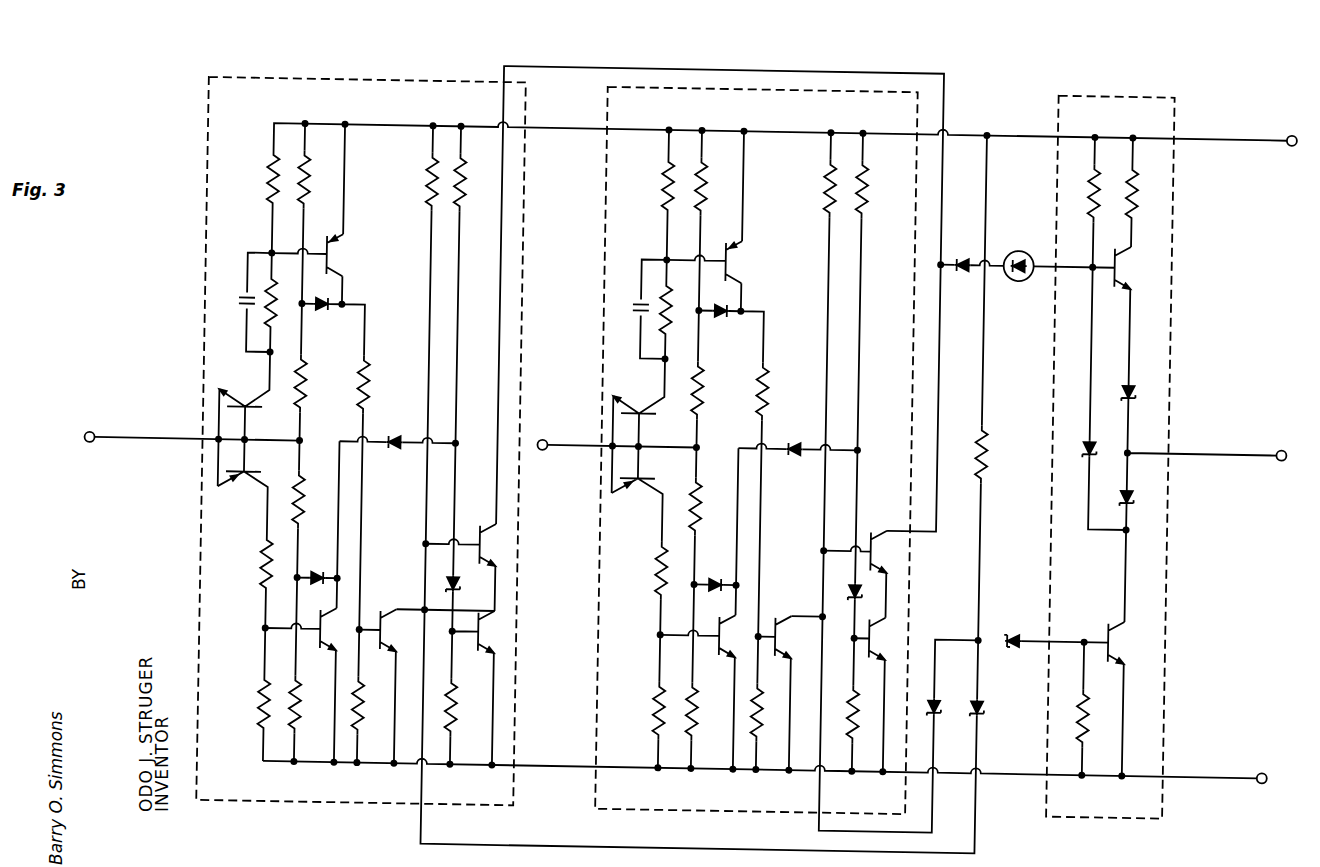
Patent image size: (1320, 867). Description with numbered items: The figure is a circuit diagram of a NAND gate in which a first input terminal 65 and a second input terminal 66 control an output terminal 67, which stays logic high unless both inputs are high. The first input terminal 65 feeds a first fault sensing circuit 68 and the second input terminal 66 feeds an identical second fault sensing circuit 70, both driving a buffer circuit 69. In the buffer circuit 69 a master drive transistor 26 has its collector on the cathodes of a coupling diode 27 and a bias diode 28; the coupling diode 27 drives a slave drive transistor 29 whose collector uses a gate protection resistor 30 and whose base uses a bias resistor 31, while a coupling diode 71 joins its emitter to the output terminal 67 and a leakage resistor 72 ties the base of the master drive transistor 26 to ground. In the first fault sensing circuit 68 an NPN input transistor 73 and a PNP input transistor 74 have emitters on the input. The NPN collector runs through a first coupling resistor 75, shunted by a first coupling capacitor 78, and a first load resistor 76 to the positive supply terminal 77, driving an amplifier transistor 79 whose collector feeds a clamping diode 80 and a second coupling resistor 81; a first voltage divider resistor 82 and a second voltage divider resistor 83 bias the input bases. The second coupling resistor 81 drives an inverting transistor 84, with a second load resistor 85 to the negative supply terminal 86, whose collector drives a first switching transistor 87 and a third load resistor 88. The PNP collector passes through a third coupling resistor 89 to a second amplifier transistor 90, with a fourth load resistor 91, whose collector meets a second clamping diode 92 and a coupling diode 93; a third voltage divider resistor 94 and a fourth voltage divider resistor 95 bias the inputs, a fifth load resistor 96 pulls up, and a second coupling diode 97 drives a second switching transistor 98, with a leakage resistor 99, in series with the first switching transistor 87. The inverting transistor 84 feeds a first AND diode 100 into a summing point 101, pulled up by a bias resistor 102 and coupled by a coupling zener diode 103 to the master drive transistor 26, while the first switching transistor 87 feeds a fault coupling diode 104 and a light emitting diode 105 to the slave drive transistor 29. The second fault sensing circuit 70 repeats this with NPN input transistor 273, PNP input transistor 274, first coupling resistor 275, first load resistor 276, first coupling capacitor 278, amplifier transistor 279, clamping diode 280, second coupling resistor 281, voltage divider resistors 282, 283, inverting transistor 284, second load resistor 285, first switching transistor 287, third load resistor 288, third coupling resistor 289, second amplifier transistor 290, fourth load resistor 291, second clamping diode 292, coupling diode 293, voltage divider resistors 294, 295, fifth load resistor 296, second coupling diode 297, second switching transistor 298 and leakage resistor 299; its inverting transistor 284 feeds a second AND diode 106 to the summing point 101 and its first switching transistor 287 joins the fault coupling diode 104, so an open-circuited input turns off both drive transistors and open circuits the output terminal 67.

The master drive transistor 26 is at (1122, 614).
The coupling diode 27 is at (1090, 434).
The bias diode 28 is at (1140, 488).
The slave drive transistor 29 is at (1130, 254).
The gate protection resistor 30 is at (1138, 180).
The bias resistor 31 is at (1092, 180).
The first input terminal 65 is at (97, 440).
The second input terminal 66 is at (550, 440).
The output terminal 67 is at (1287, 439).
The first fault sensing circuit 68 is at (371, 86).
The buffer circuit 69 is at (1174, 619).
The second fault sensing circuit 70 is at (779, 89).
The coupling diode 71 is at (1140, 380).
The leakage resistor 72 is at (1090, 704).
The NPN input transistor 73 is at (252, 410).
The PNP input transistor 74 is at (255, 484).
The first coupling resistor 75 is at (276, 336).
The first load resistor 76 is at (270, 183).
The positive supply terminal 77 is at (1292, 124).
The first coupling capacitor 78 is at (244, 305).
The amplifier transistor 79 is at (338, 264).
The clamping diode 80 is at (326, 318).
The second coupling resistor 81 is at (374, 390).
The first voltage divider resistor 82 is at (310, 172).
The second voltage divider resistor 83 is at (312, 396).
The inverting transistor 84 is at (393, 616).
The second load resistor 85 is at (371, 712).
The negative supply terminal 86 is at (1275, 762).
The first switching transistor 87 is at (496, 570).
The third load resistor 88 is at (428, 182).
The third coupling resistor 89 is at (268, 575).
The second amplifier transistor 90 is at (331, 634).
The fourth load resistor 91 is at (268, 714).
The second clamping diode 92 is at (323, 576).
The coupling diode 93 is at (402, 455).
The third voltage divider resistor 94 is at (308, 712).
The fourth voltage divider resistor 95 is at (312, 500).
The fifth load resistor 96 is at (466, 210).
The second coupling diode 97 is at (466, 582).
The second switching transistor 98 is at (490, 626).
The leakage resistor 99 is at (465, 712).
The first AND diode 100 is at (994, 706).
The summing point 101 is at (986, 633).
The bias resistor 102 is at (992, 446).
The coupling zener diode 103 is at (1020, 626).
The fault coupling diode 104 is at (965, 270).
The light emitting diode 105 is at (1022, 276).
The second AND diode 106 is at (950, 706).
The NPN input transistor 273 is at (648, 410).
The PNP input transistor 274 is at (650, 484).
The first coupling resistor 275 is at (664, 348).
The first load resistor 276 is at (664, 186).
The first coupling capacitor 278 is at (640, 304).
The amplifier transistor 279 is at (740, 264).
The clamping diode 280 is at (724, 318).
The second coupling resistor 281 is at (774, 392).
The first voltage divider resistor 282 is at (708, 180).
The second voltage divider resistor 283 is at (708, 392).
The inverting transistor 284 is at (788, 616).
The second load resistor 285 is at (773, 708).
The first switching transistor 287 is at (884, 534).
The third load resistor 288 is at (826, 182).
The third coupling resistor 289 is at (664, 576).
The second amplifier transistor 290 is at (731, 634).
The fourth load resistor 291 is at (664, 700).
The second clamping diode 292 is at (0, 0).
The coupling diode 293 is at (800, 456).
The third voltage divider resistor 294 is at (708, 708).
The fourth voltage divider resistor 295 is at (702, 486).
The fifth load resistor 296 is at (868, 184).
The second coupling diode 297 is at (856, 588).
The second switching transistor 298 is at (896, 616).
The leakage resistor 299 is at (866, 708).